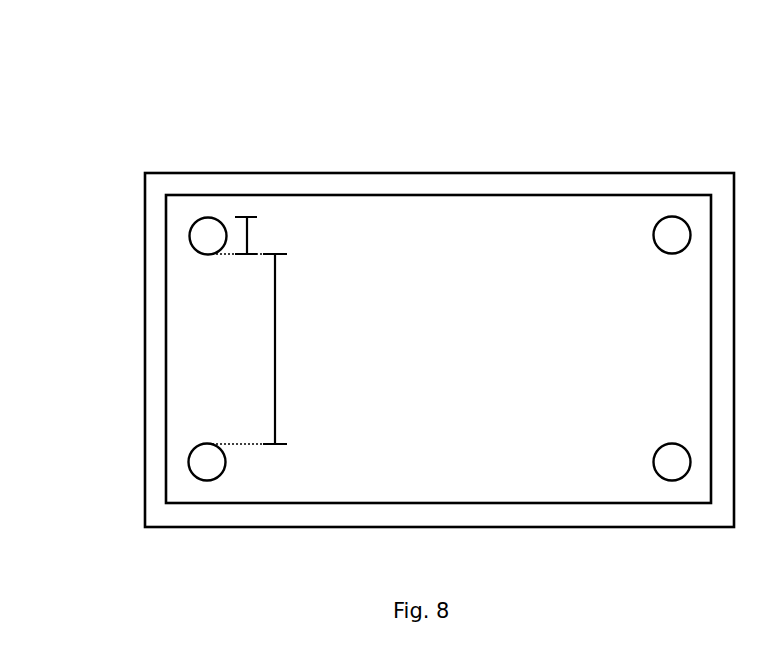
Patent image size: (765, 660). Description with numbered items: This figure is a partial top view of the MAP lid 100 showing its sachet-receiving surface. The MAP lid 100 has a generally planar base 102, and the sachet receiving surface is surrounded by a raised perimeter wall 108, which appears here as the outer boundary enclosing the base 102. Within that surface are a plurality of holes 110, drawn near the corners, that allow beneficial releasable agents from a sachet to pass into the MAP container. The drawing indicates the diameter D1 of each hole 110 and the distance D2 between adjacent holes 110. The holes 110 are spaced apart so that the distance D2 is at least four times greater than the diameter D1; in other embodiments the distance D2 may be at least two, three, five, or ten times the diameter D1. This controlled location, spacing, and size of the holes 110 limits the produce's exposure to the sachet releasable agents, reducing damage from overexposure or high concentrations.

The MAP lid 100 is at (138, 120).
The base 102 is at (438, 349).
The raised perimeter wall 108 is at (473, 172).
The holes 110 is at (189, 236).
The diameter of each hole D1 is at (248, 236).
The distance between adjacent holes D2 is at (275, 348).